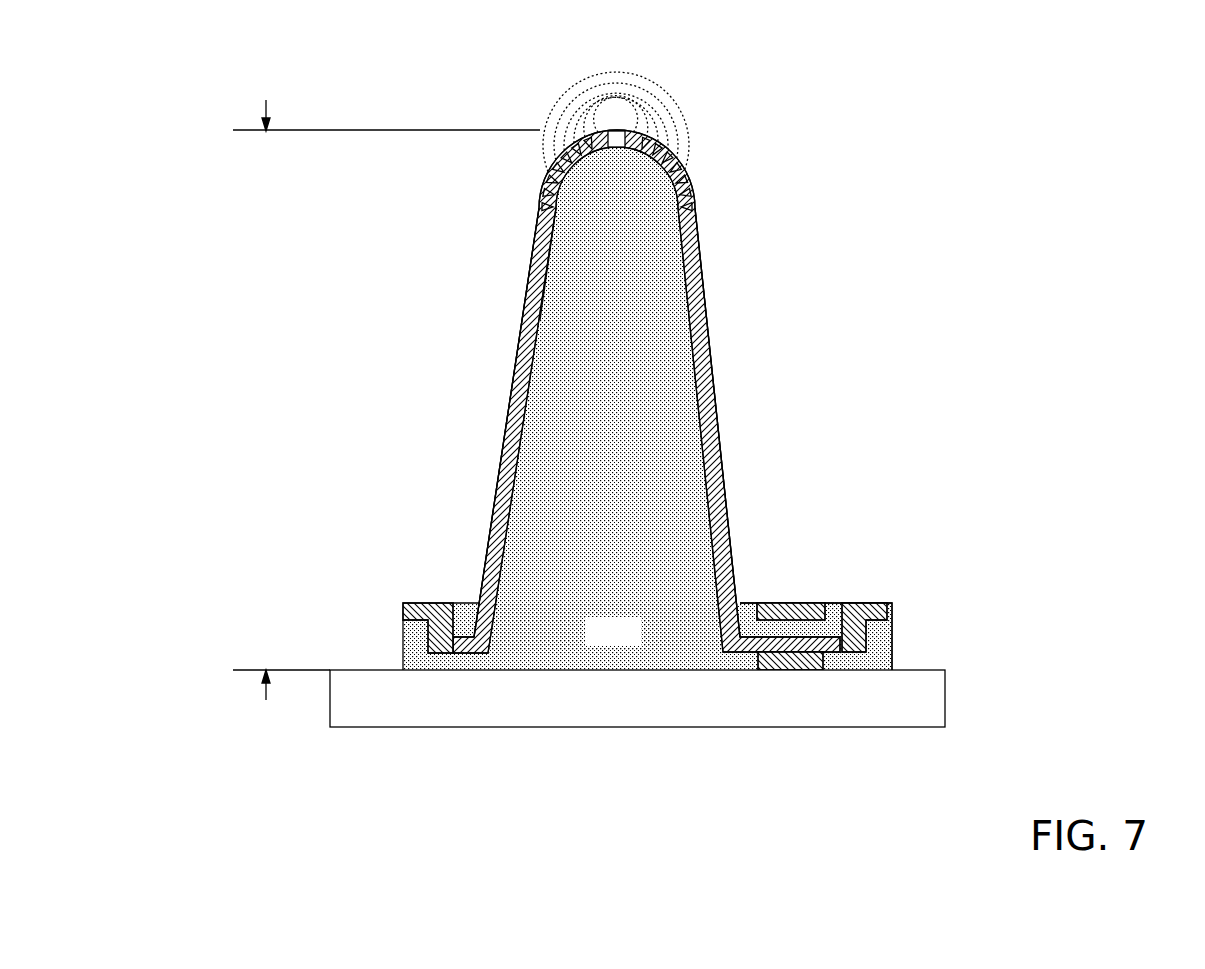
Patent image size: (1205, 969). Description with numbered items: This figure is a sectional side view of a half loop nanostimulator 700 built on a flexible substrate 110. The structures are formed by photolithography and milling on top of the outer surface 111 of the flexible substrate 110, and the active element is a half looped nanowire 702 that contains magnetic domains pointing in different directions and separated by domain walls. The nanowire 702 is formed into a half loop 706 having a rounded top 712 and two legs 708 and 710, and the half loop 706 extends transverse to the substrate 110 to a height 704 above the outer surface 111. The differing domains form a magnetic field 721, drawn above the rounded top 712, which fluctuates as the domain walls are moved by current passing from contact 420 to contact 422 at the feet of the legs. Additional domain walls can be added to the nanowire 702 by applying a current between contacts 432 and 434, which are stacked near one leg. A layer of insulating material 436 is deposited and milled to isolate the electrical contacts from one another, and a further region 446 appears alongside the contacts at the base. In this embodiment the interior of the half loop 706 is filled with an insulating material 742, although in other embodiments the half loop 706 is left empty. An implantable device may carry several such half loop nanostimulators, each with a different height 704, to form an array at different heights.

The half loop nanostimulator 700 is at (848, 302).
The half looped nanowire 702 is at (602, 147).
The height 704 is at (262, 101).
The half loop 706 is at (710, 230).
The leg 708 is at (503, 422).
The leg 710 is at (720, 428).
The rounded top 712 is at (537, 200).
The magnetic field 721 is at (543, 124).
The insulating material 742 is at (647, 408).
The flexible substrate 110 is at (945, 693).
The outer surface 111 is at (392, 669).
The contact 420 is at (892, 613).
The contact 422 is at (425, 610).
The contact 432 is at (776, 602).
The contact 434 is at (793, 669).
The insulating material 436 is at (834, 602).
The dielectric filler 446 is at (888, 644).